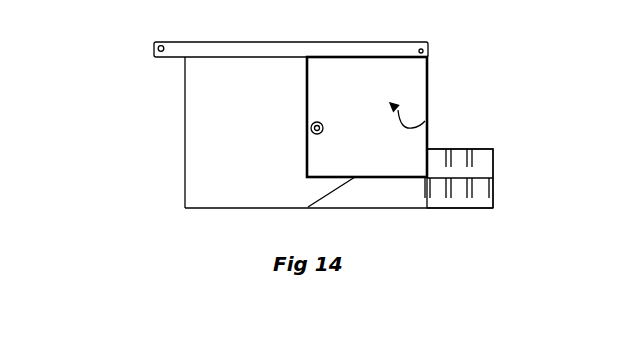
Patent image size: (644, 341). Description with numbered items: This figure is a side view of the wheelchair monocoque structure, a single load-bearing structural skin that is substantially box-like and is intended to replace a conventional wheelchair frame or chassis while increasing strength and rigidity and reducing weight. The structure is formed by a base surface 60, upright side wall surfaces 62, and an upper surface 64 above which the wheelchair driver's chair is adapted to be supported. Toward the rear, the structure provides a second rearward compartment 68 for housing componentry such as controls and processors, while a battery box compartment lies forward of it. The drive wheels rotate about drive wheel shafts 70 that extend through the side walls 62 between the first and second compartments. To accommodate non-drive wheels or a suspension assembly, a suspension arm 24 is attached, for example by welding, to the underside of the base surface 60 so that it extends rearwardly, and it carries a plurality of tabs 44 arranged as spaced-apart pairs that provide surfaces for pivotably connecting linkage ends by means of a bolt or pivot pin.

The suspension arm 24 is at (491, 135).
The tabs 44 is at (486, 168).
The base surface 60 is at (238, 208).
The upright side wall surfaces 62 is at (227, 138).
The upper surface 64 is at (350, 42).
The second rearward compartment 68 is at (423, 122).
The drive wheel shafts 70 is at (323, 123).